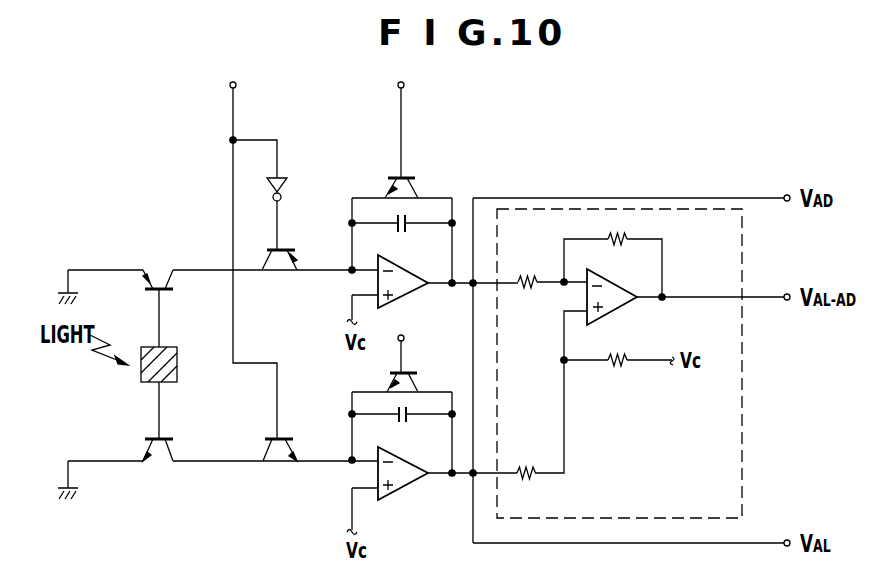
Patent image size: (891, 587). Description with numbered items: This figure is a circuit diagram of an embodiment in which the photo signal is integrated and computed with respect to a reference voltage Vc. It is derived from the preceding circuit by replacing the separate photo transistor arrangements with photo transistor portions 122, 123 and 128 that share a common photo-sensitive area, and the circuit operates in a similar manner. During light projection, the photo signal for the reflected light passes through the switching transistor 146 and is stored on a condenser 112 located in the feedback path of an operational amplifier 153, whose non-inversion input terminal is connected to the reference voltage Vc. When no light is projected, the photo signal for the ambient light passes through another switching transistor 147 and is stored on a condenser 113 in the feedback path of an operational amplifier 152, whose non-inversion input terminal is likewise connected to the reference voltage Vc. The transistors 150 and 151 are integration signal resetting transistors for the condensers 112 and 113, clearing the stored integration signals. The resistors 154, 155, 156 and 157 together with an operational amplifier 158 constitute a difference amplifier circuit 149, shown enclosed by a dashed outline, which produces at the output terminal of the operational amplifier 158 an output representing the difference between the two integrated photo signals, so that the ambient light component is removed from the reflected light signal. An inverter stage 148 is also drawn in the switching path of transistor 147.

The condenser 112 is at (402, 423).
The condenser 113 is at (400, 233).
The photo transistor portion 122 is at (168, 382).
The photo transistor portion 123 is at (170, 450).
The photo transistor portion 128 is at (168, 278).
The switching transistor 146 is at (288, 452).
The switching transistor 147 is at (292, 265).
The inverter 148 is at (284, 194).
The difference amplifier circuit 149 is at (742, 492).
The integration signal resetting transistor 150 is at (405, 177).
The integration signal resetting transistor 151 is at (405, 370).
The operational amplifier 152 is at (415, 288).
The operational amplifier 153 is at (412, 487).
The resistor 154 is at (525, 478).
The resistor 155 is at (615, 367).
The resistor 156 is at (527, 287).
The resistor 157 is at (615, 245).
The operational amplifier 158 is at (615, 312).